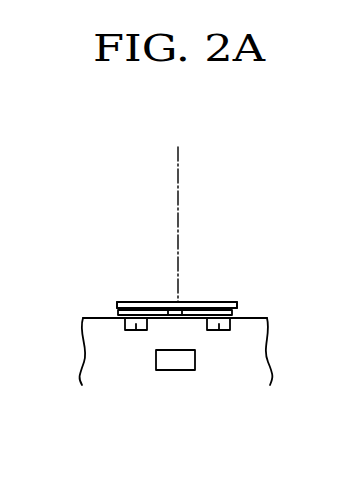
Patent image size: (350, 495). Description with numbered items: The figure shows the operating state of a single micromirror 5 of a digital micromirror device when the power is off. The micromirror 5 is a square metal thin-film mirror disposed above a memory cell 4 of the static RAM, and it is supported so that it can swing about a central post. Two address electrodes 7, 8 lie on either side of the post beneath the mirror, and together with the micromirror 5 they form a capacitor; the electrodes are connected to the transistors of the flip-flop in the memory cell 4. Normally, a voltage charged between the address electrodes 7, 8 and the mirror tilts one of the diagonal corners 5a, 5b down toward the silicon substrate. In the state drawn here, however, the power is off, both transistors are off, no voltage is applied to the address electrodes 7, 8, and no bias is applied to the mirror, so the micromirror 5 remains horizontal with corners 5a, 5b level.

The micromirror 5 is at (207, 301).
The corner of micromirror 5a is at (117, 304).
The corner of micromirror 5b is at (237, 305).
The address electrode 7 is at (133, 330).
The address electrode 8 is at (218, 330).
The memory cell 4 is at (177, 370).